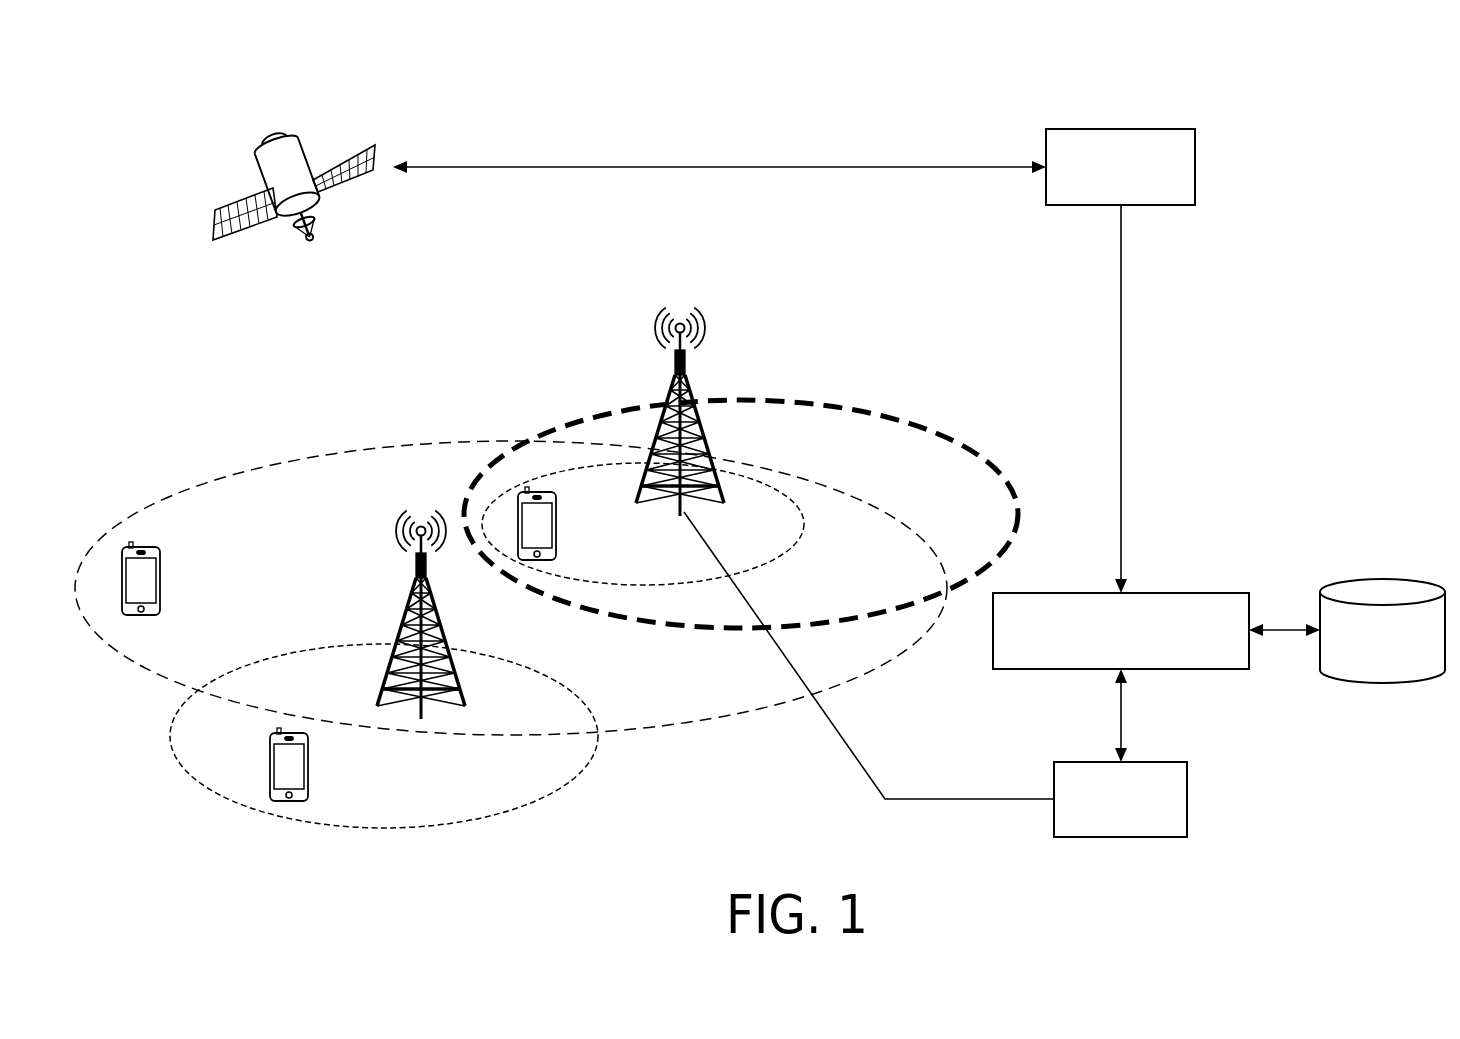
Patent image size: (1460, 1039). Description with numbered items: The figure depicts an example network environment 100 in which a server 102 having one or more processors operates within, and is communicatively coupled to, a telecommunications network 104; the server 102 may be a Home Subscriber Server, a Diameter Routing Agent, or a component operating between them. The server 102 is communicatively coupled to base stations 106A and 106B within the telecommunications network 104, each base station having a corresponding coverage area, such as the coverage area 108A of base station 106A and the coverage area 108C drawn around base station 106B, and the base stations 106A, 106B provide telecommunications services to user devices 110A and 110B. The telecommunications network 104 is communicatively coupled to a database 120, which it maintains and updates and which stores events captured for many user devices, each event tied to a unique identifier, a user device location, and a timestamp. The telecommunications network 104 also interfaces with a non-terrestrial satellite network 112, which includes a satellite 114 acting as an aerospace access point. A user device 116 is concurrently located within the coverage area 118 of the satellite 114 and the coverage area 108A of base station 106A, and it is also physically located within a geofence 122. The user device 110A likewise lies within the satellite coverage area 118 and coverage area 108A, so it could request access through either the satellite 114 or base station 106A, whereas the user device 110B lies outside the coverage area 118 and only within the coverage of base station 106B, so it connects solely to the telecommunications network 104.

The network environment 100 is at (1302, 97).
The server 102 is at (1098, 840).
The telecommunications network 104 is at (1100, 593).
The base station 106A is at (672, 372).
The base station 106B is at (412, 590).
The coverage area 108A is at (800, 530).
The coverage area 108C is at (246, 661).
The user device 110A is at (556, 520).
The user device 110B is at (308, 770).
The satellite network 112 is at (1102, 129).
The satellite 114 is at (258, 156).
The user device 116 is at (162, 580).
The coverage area 118 is at (283, 456).
The database 120 is at (1372, 580).
The geofence 122 is at (833, 402).